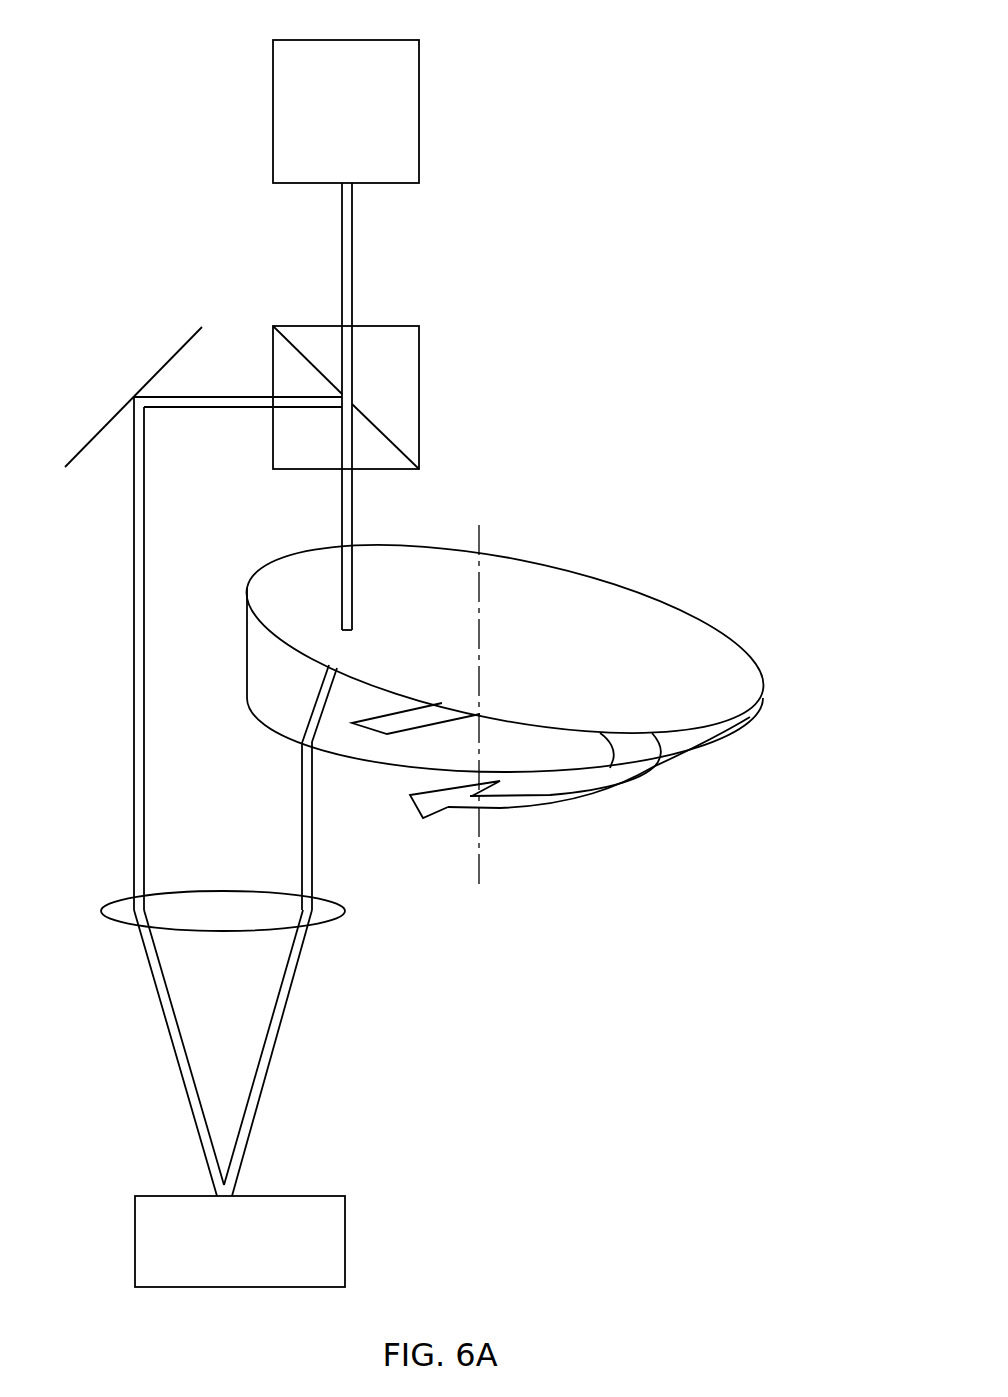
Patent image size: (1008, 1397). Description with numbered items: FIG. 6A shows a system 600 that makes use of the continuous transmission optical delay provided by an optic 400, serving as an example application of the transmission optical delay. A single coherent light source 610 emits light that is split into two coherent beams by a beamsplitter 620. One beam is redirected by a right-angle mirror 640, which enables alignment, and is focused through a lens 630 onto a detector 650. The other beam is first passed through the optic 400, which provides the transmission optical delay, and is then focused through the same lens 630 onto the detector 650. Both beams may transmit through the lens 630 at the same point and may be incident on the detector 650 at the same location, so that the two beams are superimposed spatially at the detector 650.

The system 600 is at (673, 32).
The coherent light source 610 is at (436, 108).
The beamsplitter 620 is at (427, 402).
The lens 630 is at (328, 928).
The right-angle mirror 640 is at (133, 380).
The detector 650 is at (358, 1199).
The optic 400 is at (768, 696).